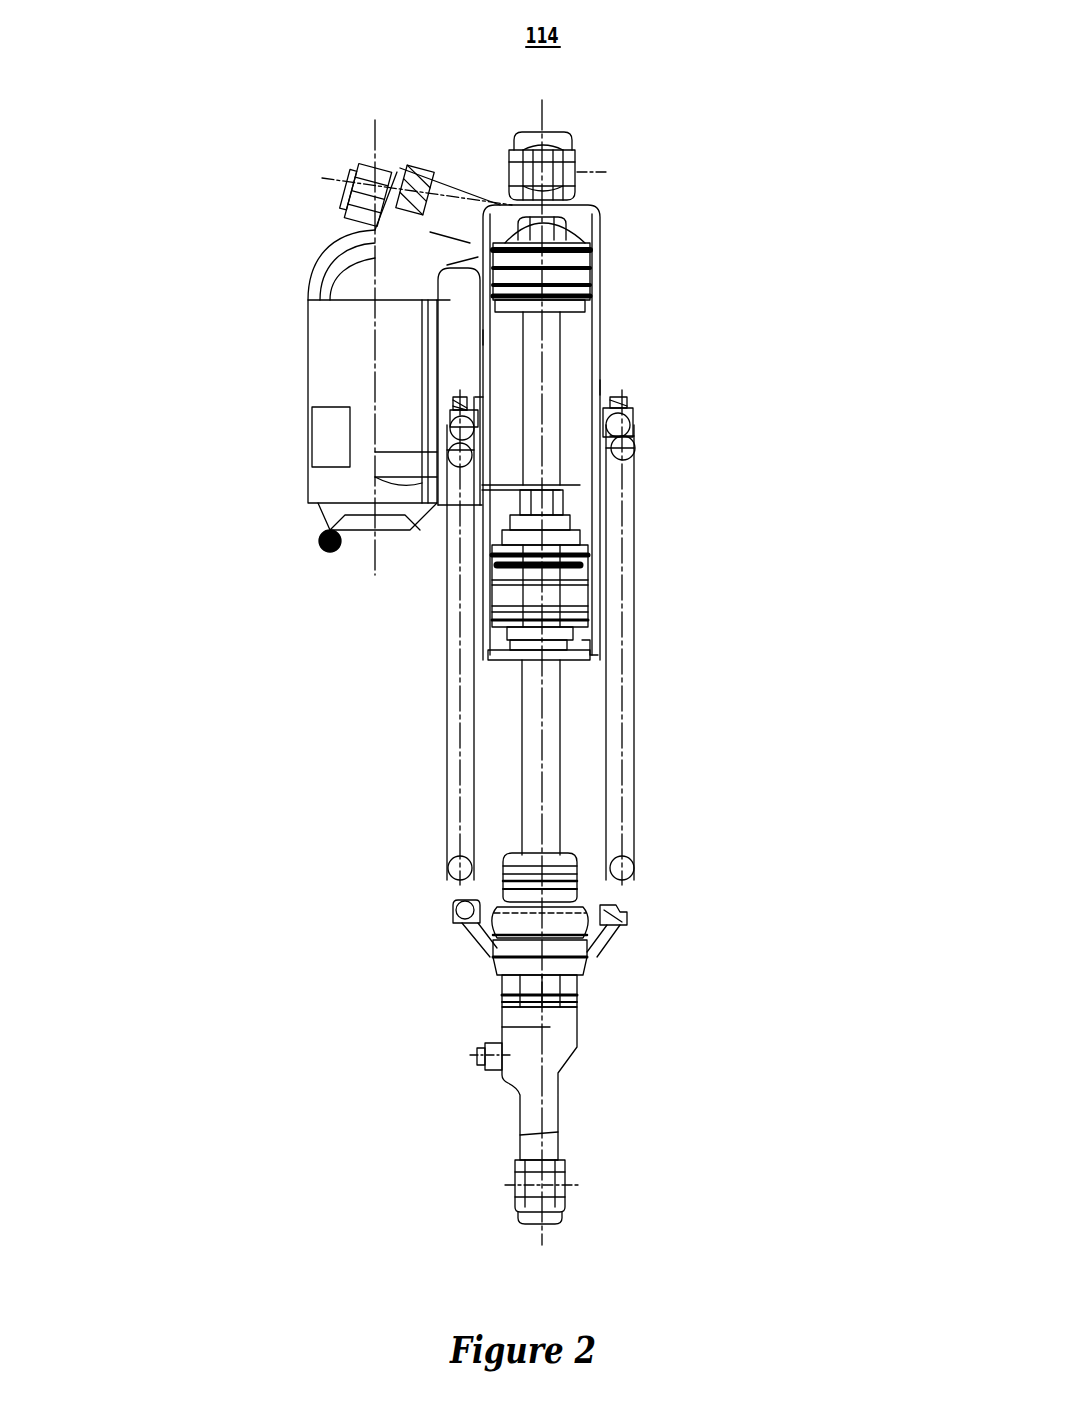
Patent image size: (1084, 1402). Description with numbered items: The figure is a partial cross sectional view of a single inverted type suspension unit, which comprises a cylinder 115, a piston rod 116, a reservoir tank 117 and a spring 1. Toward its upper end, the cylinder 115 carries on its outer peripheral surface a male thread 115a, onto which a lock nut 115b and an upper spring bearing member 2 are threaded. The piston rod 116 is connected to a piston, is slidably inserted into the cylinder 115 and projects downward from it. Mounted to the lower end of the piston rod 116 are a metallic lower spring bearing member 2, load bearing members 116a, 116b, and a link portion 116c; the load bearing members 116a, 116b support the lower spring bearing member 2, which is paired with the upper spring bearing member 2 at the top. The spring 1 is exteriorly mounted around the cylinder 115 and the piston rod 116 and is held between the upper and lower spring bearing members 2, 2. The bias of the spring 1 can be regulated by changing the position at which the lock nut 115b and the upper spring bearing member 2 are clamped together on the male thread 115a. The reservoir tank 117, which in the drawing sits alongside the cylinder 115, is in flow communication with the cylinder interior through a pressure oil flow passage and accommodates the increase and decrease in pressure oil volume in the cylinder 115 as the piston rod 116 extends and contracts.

The cylinder 115 is at (604, 269).
The male thread 115a is at (604, 339).
The lock nut 115b is at (610, 398).
The piston rod 116 is at (555, 693).
The load bearing member 116a is at (597, 942).
The load bearing member 116b is at (602, 958).
The link portion 116c is at (560, 1118).
The reservoir tank 117 is at (315, 348).
The spring 1 is at (625, 447).
The spring bearing member 2 is at (622, 407).